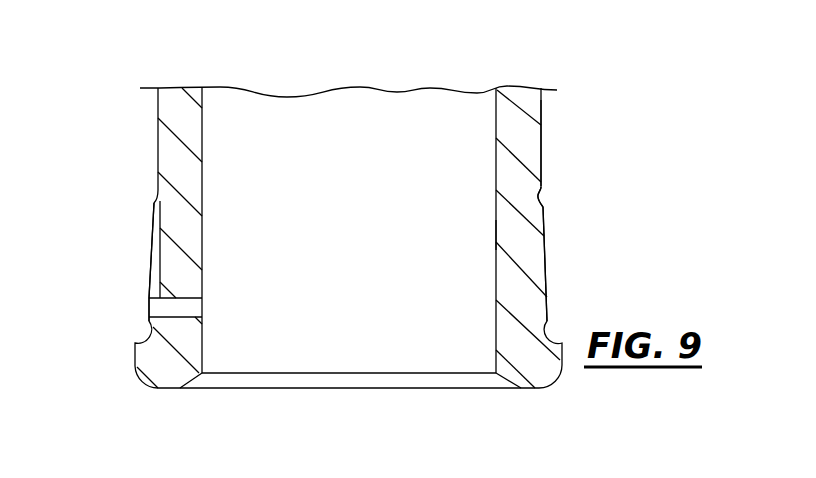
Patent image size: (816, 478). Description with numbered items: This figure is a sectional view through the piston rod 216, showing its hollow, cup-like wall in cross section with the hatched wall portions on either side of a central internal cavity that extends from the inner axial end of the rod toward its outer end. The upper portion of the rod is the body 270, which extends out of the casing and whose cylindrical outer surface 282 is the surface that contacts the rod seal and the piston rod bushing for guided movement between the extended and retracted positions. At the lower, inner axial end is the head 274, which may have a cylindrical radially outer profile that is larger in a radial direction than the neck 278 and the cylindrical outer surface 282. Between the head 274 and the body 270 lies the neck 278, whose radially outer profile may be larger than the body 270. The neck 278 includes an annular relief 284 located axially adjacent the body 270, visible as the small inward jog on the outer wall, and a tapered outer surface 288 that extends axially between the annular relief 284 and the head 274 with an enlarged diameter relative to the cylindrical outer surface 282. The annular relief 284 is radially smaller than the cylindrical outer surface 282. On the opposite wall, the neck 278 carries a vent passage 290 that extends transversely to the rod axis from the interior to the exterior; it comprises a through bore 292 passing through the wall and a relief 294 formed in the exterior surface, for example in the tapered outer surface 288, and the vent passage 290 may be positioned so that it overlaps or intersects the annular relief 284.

The piston rod 216 is at (152, 407).
The body 270 is at (513, 110).
The head 274 is at (538, 357).
The neck 278 is at (545, 236).
The cylindrical outer surface 282 is at (543, 118).
The annular relief 284 is at (541, 196).
The tapered outer surface 288 is at (545, 245).
The vent passage 290 is at (134, 305).
The through bore 292 is at (192, 306).
The relief 294 is at (153, 292).